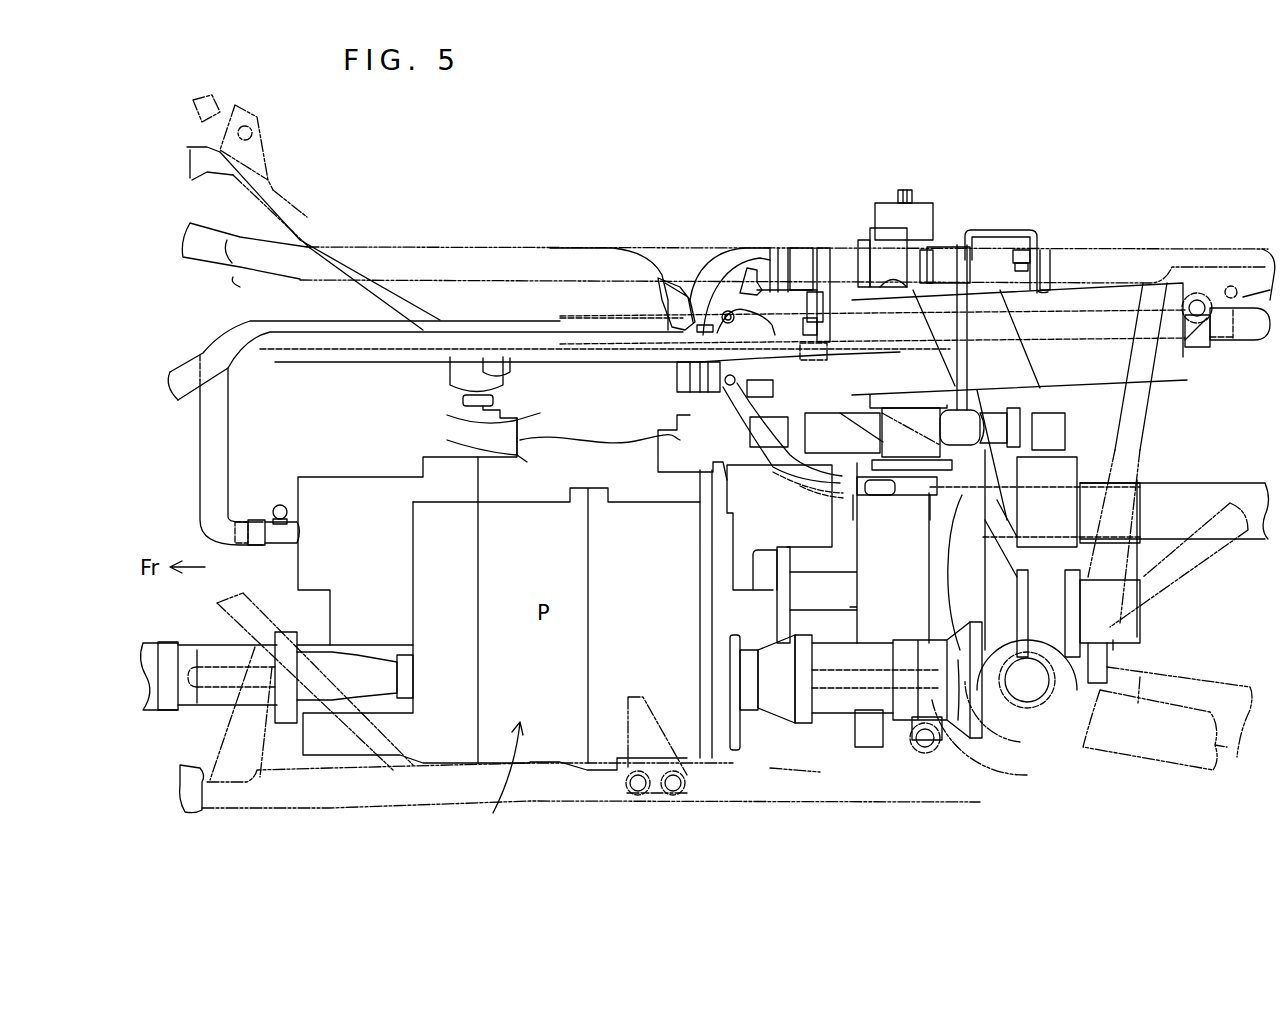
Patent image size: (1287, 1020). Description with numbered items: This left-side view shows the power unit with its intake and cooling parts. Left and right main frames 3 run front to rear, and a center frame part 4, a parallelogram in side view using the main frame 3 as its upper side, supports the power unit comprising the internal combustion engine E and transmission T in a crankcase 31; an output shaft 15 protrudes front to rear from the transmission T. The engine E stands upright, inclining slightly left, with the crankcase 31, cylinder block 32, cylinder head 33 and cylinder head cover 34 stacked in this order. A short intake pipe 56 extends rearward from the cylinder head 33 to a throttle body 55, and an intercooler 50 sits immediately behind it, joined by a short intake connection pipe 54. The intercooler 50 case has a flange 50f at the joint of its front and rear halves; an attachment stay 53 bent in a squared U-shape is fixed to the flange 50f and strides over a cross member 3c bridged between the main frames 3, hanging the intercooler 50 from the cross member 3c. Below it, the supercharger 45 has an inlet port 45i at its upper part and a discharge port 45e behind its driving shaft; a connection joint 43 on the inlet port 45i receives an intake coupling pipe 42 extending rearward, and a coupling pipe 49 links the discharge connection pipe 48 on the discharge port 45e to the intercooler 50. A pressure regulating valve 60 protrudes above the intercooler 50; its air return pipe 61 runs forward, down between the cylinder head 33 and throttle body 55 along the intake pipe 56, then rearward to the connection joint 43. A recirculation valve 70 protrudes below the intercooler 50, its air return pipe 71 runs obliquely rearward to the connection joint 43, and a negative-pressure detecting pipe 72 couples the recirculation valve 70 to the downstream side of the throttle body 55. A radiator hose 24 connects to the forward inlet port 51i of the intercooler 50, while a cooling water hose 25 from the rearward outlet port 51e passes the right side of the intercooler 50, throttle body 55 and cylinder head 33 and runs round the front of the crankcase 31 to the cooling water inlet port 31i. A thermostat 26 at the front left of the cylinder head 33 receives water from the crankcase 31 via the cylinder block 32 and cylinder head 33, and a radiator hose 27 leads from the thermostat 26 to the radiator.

The main frame 3 is at (452, 240).
The radiator hose 27 is at (340, 256).
The radiator hose 24 is at (280, 363).
The cooling water hose 25 is at (232, 447).
The cooling water inlet port 31i is at (256, 520).
The internal combustion engine E is at (402, 466).
The thermostat 26 is at (450, 377).
The cylinder head 33 is at (479, 413).
The cylinder block 32 is at (466, 442).
The output shaft 15 is at (213, 687).
The center frame part 4 is at (713, 802).
The crankcase 31 is at (603, 737).
The transmission T is at (497, 776).
The negative-pressure detecting pipe 72 is at (723, 447).
The air return pipe 61 is at (763, 415).
The recirculation valve 70 is at (883, 447).
The cylinder head cover 34 is at (572, 250).
The intake pipe 56 is at (690, 300).
The throttle body 55 is at (770, 297).
The inlet port 51i is at (795, 280).
The intake connection pipe 54 is at (825, 343).
The pressure regulating valve 60 is at (923, 207).
The flange 50f is at (955, 250).
The attachment stay 53 is at (995, 228).
The cross member 3c is at (1015, 258).
The intercooler 50 is at (1108, 282).
The air return pipe 71 is at (982, 411).
The outlet port 51e is at (1217, 347).
The coupling pipe 49 is at (1137, 437).
The connection joint 43 is at (1040, 427).
The intake coupling pipe 42 is at (1205, 483).
The discharge connection pipe 48 is at (1130, 640).
The supercharger 45 is at (883, 597).
The inlet port 45i is at (958, 720).
The discharge port 45e is at (990, 670).